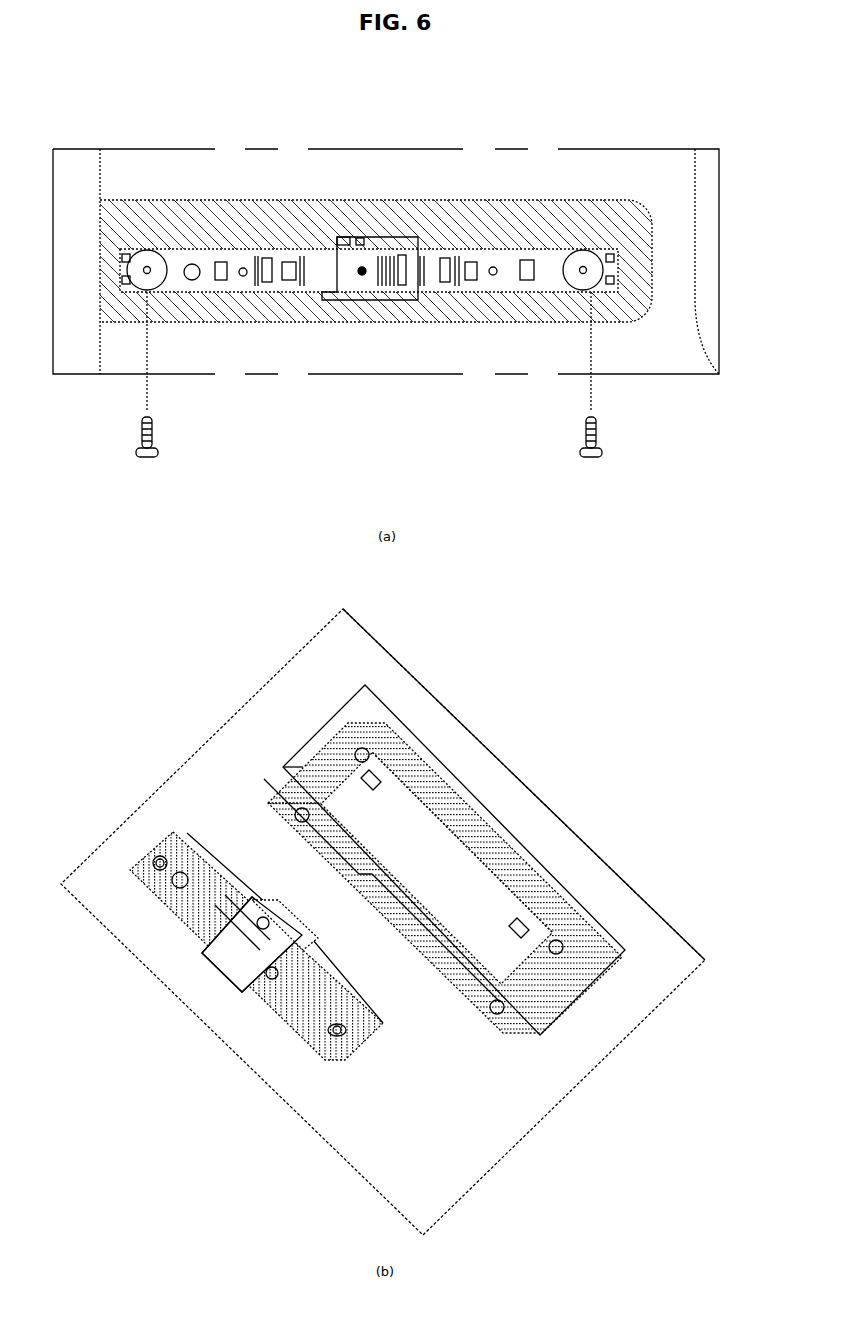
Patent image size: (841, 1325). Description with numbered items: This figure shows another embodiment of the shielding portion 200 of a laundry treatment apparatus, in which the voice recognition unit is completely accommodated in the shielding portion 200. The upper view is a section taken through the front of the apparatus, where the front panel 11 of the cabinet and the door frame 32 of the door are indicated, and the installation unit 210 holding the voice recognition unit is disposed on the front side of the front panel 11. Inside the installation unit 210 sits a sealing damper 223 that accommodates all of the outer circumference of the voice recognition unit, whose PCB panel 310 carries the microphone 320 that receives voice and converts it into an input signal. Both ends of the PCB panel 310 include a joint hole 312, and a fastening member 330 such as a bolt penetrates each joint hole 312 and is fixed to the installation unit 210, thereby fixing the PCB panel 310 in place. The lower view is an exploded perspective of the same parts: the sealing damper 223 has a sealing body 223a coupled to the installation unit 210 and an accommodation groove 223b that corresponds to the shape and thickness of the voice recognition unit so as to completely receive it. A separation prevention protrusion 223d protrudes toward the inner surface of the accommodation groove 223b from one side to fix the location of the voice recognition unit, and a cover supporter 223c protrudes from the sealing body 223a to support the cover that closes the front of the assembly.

The front panel 11 is at (78, 157).
The door frame 32 is at (293, 170).
The shielding portion 200 is at (462, 192).
The sealing damper 223 is at (361, 215).
The installation unit 210 is at (330, 732).
The sealing body 223a is at (264, 779).
The accommodation groove 223b is at (447, 867).
The cover supporter 223c is at (367, 760).
The separation prevention protrusion 223d is at (374, 772).
The PCB panel 310 is at (188, 256).
The joint hole 312 is at (153, 878).
The microphone 320 is at (165, 905).
The fastening member 330 is at (147, 458).